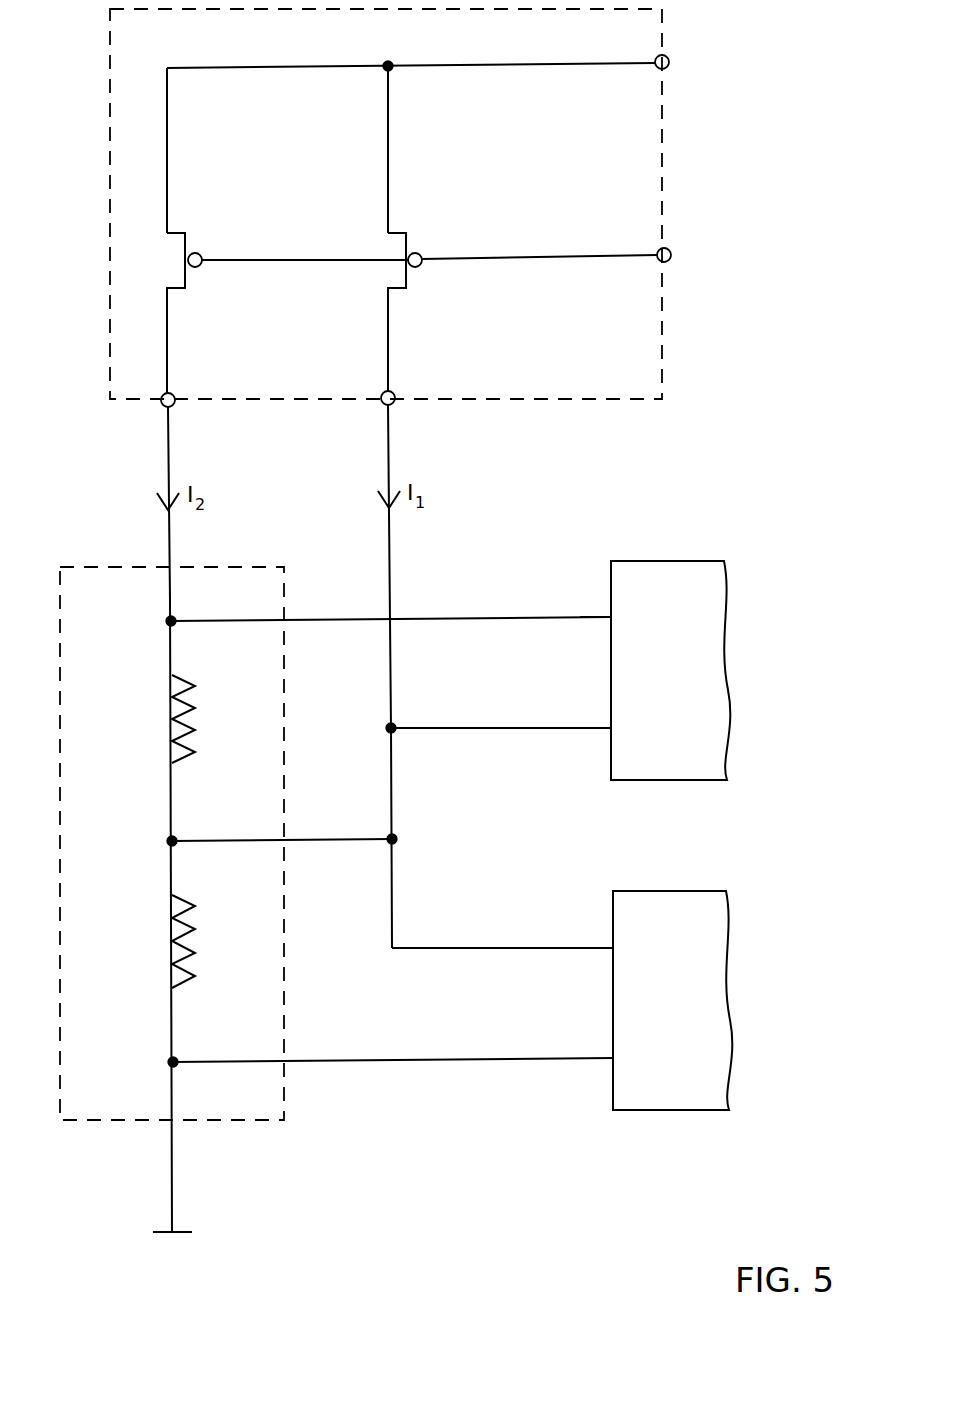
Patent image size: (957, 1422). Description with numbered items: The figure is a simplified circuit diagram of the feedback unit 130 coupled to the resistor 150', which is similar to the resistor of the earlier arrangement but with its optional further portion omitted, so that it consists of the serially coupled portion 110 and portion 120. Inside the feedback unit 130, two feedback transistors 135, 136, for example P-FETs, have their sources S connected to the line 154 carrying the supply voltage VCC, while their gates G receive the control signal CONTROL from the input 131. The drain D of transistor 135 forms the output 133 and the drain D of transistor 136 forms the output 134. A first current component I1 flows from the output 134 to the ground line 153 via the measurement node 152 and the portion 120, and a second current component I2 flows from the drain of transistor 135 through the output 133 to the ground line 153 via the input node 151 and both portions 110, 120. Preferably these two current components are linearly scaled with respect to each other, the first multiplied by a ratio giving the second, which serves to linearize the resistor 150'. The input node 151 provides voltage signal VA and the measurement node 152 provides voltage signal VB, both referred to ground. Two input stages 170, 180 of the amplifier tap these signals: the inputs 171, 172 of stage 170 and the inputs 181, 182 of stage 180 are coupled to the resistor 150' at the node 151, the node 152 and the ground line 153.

The feedback unit 130 is at (498, 34).
The line 154 is at (668, 58).
The input 131 is at (669, 250).
The feedback transistor 135 is at (201, 254).
The feedback transistor 136 is at (421, 254).
The output 133 is at (162, 407).
The output 134 is at (382, 405).
The resistor 150' is at (172, 843).
The input node 151 is at (167, 618).
The portion 110 is at (176, 720).
The measurement node 152 is at (169, 838).
The portion 120 is at (176, 940).
The ground line 153 is at (166, 1234).
The stage 170 is at (714, 593).
The input 171 is at (609, 606).
The input 172 is at (609, 718).
The stage 180 is at (717, 922).
The input 181 is at (611, 936).
The input 182 is at (611, 1048).